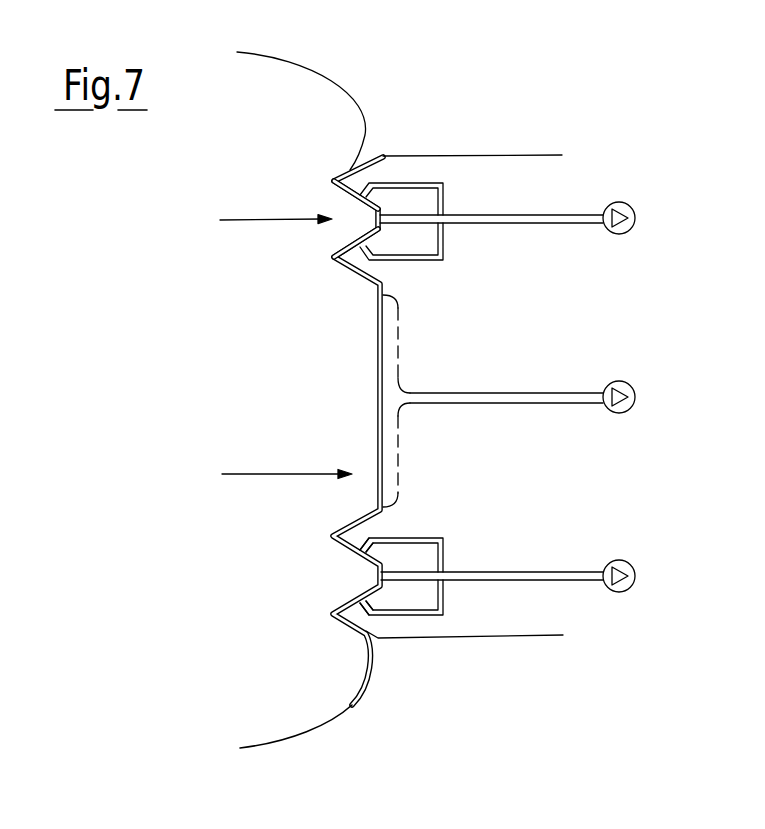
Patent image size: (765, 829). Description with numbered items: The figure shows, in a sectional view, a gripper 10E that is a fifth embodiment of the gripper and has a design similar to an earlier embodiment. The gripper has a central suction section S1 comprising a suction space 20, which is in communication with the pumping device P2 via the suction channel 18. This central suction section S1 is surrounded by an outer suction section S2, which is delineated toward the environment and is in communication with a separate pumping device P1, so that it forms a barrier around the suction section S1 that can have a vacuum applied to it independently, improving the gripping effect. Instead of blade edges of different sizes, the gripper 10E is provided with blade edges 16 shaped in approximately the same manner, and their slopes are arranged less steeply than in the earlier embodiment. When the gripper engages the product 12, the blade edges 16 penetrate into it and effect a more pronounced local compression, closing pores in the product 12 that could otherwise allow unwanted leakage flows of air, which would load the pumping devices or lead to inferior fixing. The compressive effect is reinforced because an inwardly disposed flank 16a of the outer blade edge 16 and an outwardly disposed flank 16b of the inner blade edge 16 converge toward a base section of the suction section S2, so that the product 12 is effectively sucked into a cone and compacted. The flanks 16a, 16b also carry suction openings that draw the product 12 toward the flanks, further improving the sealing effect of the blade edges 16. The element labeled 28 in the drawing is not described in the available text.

The blade edge 16 is at (348, 168).
The inwardly disposed flank of the outer blade edge 16a is at (332, 193).
The outwardly disposed flank of the inner blade edge 16b is at (333, 243).
The suction section S2 is at (260, 218).
The suction section S1 is at (272, 472).
The gripper 10E is at (502, 125).
The suction channel 18 is at (537, 582).
The product 12 is at (280, 743).
The nozzle insert 28 is at (390, 569).
The suction space 20 is at (390, 423).
The pumping device P1 is at (518, 378).
The pumping device P2 is at (533, 374).